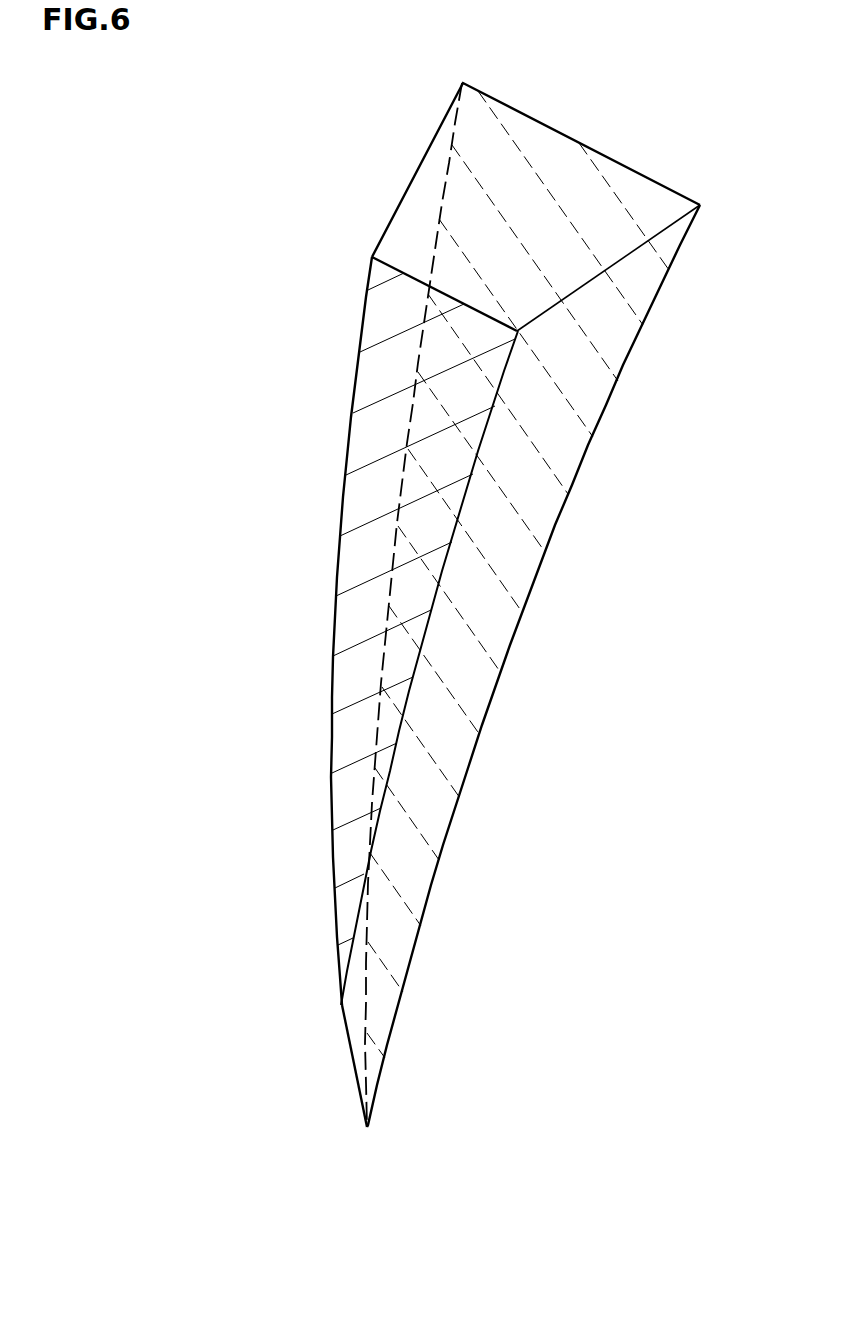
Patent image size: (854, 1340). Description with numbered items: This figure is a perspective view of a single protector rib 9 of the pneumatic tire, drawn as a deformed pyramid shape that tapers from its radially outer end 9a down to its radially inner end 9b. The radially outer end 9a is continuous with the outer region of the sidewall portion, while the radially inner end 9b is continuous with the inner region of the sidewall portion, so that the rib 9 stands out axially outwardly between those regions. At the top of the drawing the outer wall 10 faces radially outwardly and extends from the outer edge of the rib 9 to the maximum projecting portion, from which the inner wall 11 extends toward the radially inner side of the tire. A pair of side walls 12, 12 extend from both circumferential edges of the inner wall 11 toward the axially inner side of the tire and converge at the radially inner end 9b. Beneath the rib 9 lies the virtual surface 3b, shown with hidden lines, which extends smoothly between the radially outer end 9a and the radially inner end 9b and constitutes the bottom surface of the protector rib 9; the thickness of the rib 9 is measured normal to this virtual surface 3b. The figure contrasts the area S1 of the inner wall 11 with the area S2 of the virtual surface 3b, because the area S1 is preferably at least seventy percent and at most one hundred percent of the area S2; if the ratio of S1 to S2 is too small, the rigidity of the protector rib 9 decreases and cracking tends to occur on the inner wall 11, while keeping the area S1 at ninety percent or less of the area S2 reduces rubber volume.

The protector rib 9 is at (450, 664).
The radially outer end 9a is at (647, 173).
The radially inner end 9b is at (367, 1127).
The outer wall 10 is at (533, 217).
The inner wall 11 is at (357, 580).
The side walls 12 is at (439, 574).
The area of the inner wall S1 is at (341, 609).
The area of the virtual surface S2 is at (439, 574).
The virtual surface 3b is at (520, 483).